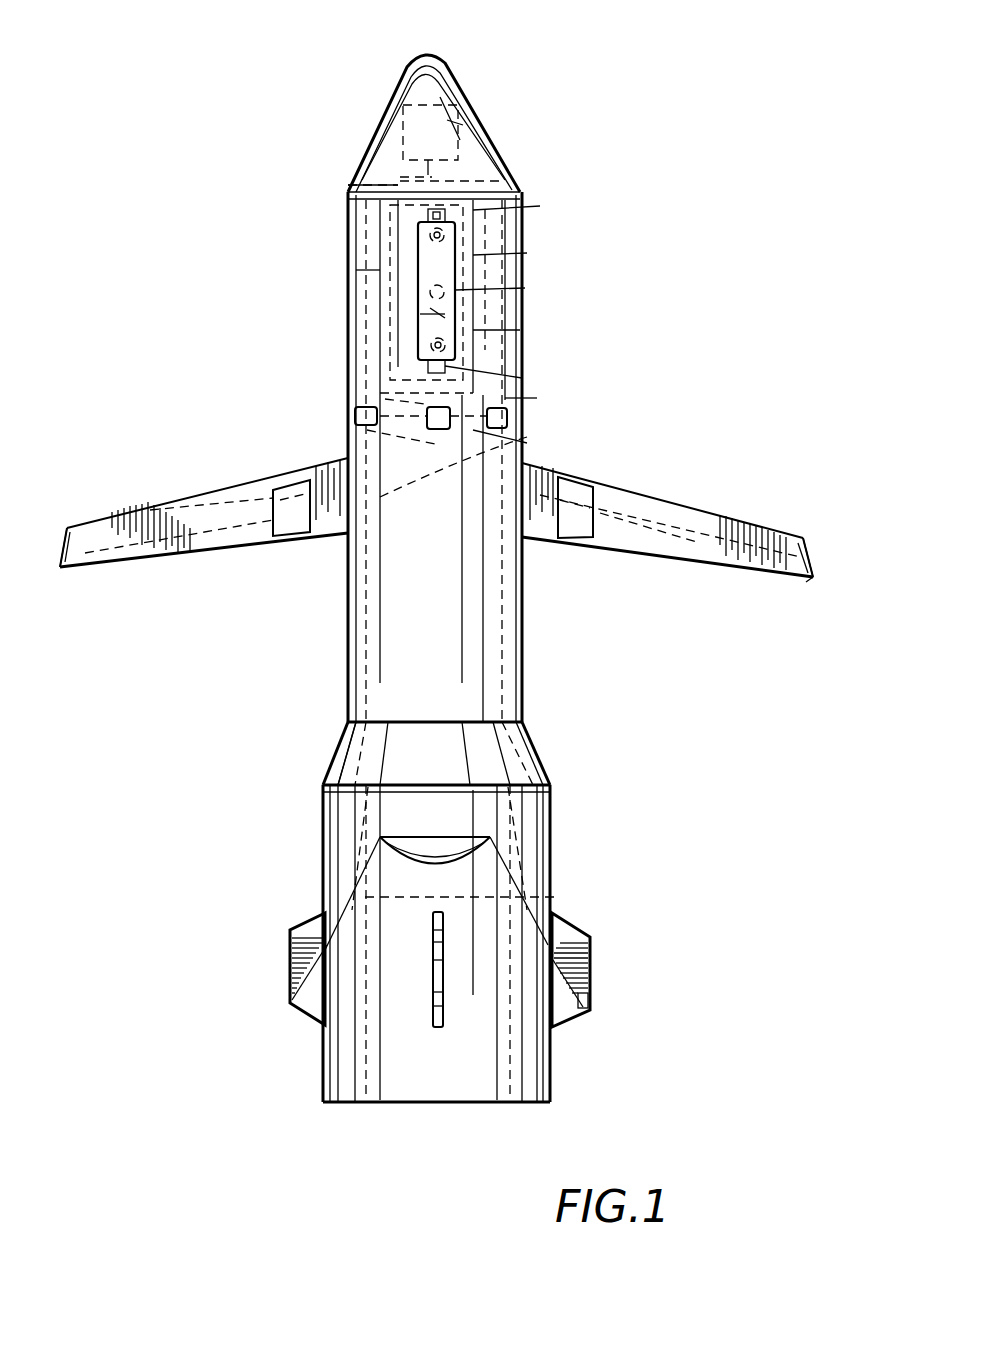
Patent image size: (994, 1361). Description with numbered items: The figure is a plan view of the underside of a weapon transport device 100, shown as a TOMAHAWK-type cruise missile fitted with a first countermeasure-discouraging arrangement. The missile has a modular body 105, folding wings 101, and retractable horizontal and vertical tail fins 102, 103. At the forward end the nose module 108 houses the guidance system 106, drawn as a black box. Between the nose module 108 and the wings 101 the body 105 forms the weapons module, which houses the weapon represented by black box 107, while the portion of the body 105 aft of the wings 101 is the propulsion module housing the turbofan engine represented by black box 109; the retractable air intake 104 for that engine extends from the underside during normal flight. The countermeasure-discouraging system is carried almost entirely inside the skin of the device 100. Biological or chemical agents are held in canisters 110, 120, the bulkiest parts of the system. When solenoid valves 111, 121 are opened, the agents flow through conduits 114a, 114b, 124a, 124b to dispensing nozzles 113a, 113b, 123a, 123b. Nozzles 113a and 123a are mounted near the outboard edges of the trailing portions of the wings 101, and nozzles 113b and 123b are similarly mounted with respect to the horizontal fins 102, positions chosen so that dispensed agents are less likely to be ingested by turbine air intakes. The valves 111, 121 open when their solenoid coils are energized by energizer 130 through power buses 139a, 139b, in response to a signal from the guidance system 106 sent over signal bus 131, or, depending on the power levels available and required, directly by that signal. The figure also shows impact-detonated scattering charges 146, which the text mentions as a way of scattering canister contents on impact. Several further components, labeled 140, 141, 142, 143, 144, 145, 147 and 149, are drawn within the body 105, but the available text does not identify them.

The weapon transport device 100 is at (663, 35).
The folding wings 101 is at (260, 535).
The horizontal tail fins 102 is at (562, 948).
The vertical tail fin 103 is at (443, 1010).
The retractable air intake 104 is at (453, 843).
The modular body 105 is at (522, 668).
The guidance system 106 is at (470, 118).
The weapon 107 is at (518, 192).
The nose module 108 is at (438, 80).
The turbofan engine 109 is at (552, 896).
The canister 110 is at (347, 270).
The solenoid valve 111 is at (352, 413).
The dispensing nozzle 113a is at (63, 570).
The dispensing nozzle 113b is at (295, 1010).
The conduit 114a is at (183, 528).
The conduit 114b is at (357, 748).
The canister 120 is at (527, 253).
The solenoid valve 121 is at (522, 420).
The dispensing nozzle 123a is at (815, 578).
The dispensing nozzle 123b is at (585, 1015).
The conduit 124a is at (237, 532).
The conduit 124b is at (553, 923).
The energizer 130 is at (385, 399).
The signal bus 131 is at (400, 181).
The power bus 139a is at (355, 437).
The power bus 139b is at (527, 443).
The battery module 140 is at (430, 252).
The frame member 141 is at (537, 398).
The electronics housing 142 is at (455, 307).
The fastener 143 is at (540, 206).
The antenna 144 is at (428, 218).
The connector 145 is at (443, 234).
The impact-detonated scattering charges 146 is at (420, 314).
The mount 147 is at (442, 212).
The sensor 149 is at (525, 288).